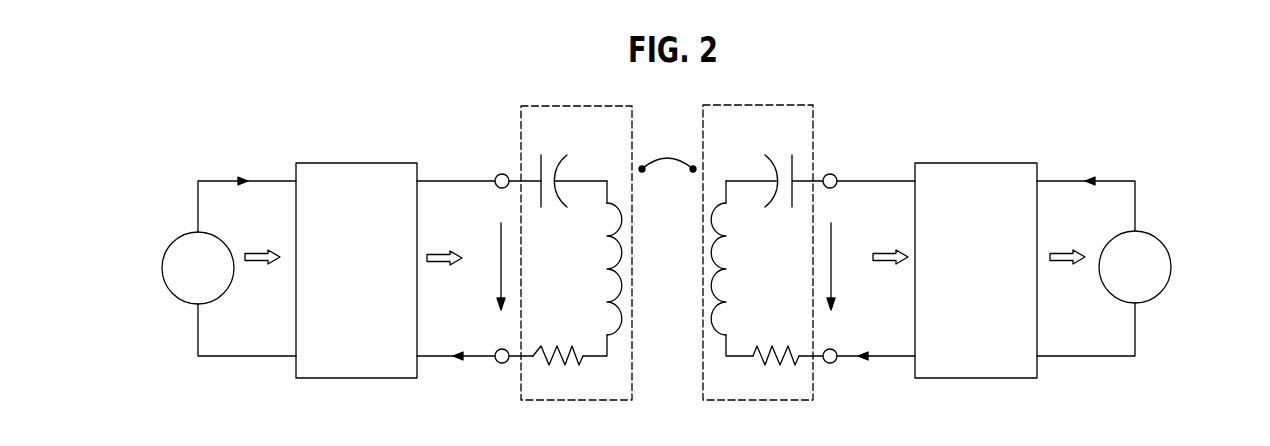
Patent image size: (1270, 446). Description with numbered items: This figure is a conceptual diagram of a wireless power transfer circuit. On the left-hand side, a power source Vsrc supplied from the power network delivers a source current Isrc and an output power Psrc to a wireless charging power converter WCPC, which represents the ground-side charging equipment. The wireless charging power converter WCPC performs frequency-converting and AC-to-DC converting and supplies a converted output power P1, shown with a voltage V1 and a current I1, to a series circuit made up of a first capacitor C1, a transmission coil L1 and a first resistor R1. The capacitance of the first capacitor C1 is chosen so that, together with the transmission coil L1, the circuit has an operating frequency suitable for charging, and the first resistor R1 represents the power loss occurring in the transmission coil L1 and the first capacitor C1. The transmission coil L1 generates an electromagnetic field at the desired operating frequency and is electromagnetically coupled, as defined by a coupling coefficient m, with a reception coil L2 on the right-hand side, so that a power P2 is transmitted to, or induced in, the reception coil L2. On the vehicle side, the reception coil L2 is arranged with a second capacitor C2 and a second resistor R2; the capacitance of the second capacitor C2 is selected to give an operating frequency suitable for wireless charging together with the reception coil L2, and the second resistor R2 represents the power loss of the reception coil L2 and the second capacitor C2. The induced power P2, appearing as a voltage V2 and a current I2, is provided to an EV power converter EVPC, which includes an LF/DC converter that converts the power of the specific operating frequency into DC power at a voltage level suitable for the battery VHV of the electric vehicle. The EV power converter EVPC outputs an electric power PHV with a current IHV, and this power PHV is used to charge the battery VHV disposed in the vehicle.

The power source Vsrc is at (209, 268).
The source current Isrc is at (246, 167).
The output power Psrc is at (261, 242).
The wireless charging power converter WCPC is at (356, 270).
The output power P1 is at (444, 242).
The primary-side voltage V1 is at (491, 266).
The primary-side current I1 is at (459, 340).
The first capacitor C1 is at (574, 163).
The transmission coil L1 is at (602, 268).
The first resistor R1 is at (558, 337).
The coupling coefficient m is at (667, 151).
The second capacitor C2 is at (774, 163).
The reception coil L2 is at (732, 268).
The second resistor R2 is at (788, 337).
The secondary-side voltage V2 is at (842, 266).
The secondary-side current I2 is at (865, 340).
The power P2 is at (890, 240).
The EV power converter EVPC is at (976, 270).
The electric power PHV is at (1065, 240).
The high-voltage battery current IHV is at (1086, 167).
The battery VHV is at (1127, 268).